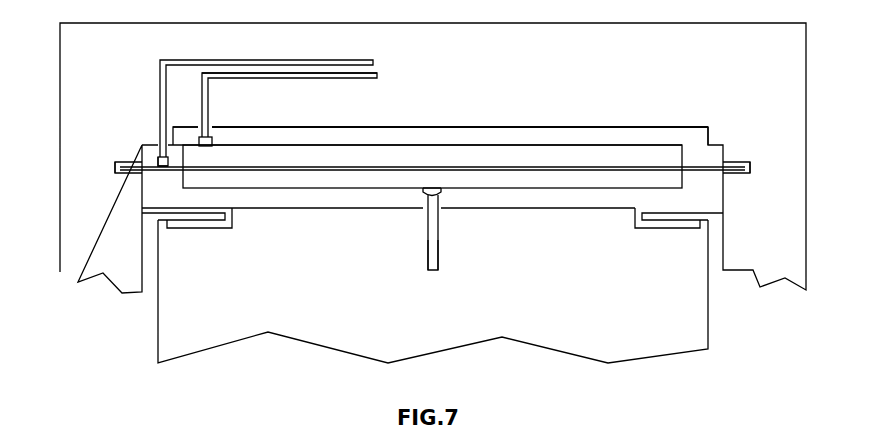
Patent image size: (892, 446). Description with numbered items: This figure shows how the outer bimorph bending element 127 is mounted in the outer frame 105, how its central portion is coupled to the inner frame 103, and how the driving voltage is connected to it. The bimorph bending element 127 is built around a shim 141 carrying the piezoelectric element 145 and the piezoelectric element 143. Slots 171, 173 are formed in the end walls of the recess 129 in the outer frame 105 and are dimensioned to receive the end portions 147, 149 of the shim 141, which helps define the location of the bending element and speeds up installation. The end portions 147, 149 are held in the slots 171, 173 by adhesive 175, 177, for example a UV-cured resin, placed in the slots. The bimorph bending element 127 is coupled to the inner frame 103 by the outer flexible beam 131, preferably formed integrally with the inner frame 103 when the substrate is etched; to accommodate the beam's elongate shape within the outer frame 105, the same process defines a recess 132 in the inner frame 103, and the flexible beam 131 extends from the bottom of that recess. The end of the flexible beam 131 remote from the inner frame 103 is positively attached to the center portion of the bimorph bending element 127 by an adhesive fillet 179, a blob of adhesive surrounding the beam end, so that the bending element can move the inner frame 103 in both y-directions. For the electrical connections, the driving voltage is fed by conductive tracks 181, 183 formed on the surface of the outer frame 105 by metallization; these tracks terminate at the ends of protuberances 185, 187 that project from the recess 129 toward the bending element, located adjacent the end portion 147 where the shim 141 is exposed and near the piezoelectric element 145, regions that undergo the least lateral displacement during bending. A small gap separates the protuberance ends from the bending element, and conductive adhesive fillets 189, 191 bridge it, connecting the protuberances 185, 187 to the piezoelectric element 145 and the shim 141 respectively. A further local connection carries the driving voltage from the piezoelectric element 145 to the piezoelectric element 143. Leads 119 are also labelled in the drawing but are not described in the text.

The inner frame 103 is at (400, 338).
The outer frame 105 is at (782, 63).
The lead 119 is at (197, 240).
The outer bimorph bending element 127 is at (632, 143).
The recess 129 is at (573, 124).
The outer flexible beam 131 is at (441, 196).
The recess 132 is at (444, 240).
The shim 141 is at (507, 165).
The piezoelectric element 143 is at (337, 180).
The piezoelectric element 145 is at (466, 155).
The end portion 147 is at (155, 180).
The end portion 149 is at (705, 165).
The slot 171 is at (118, 175).
The slot 173 is at (748, 162).
The adhesive 175 is at (119, 161).
The adhesive 177 is at (749, 172).
The adhesive fillet 179 is at (426, 191).
The conductive track 181 is at (378, 78).
The conductive track 183 is at (373, 61).
The protuberance 185 is at (208, 137).
The protuberance 187 is at (160, 157).
The conductive adhesive fillet 189 is at (213, 143).
The conductive adhesive fillet 191 is at (158, 160).